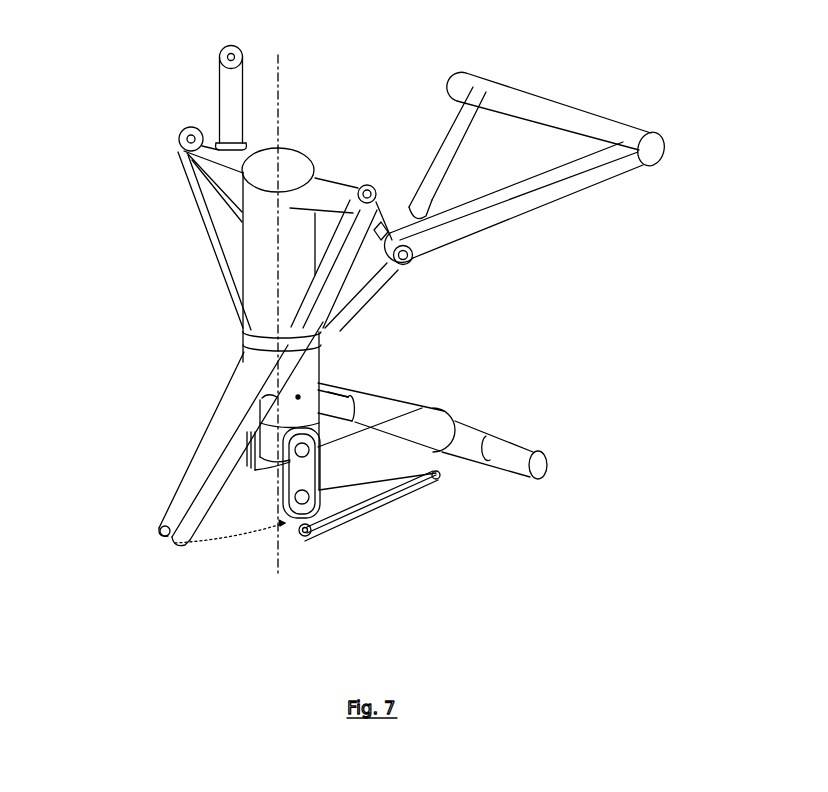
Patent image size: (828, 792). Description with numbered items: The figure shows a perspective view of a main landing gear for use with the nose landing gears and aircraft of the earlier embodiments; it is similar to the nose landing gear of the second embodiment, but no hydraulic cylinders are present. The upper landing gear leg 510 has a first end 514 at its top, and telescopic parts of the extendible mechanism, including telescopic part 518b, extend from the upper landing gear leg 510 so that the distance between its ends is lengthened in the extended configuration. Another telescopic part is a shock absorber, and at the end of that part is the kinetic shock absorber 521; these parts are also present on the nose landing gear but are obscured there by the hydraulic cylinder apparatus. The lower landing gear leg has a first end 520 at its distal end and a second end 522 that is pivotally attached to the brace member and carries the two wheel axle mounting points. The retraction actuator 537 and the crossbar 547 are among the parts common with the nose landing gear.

The upper landing gear leg 510 is at (262, 254).
The first end of the upper landing gear leg 514 is at (185, 152).
The telescopic part 518b is at (296, 396).
The first end of the lower landing gear leg 520 is at (445, 415).
The kinetic shock absorber 521 is at (275, 484).
The second end of the lower landing gear leg 522 is at (168, 534).
The retraction actuator 537 is at (230, 60).
The crossbar 547 is at (532, 118).